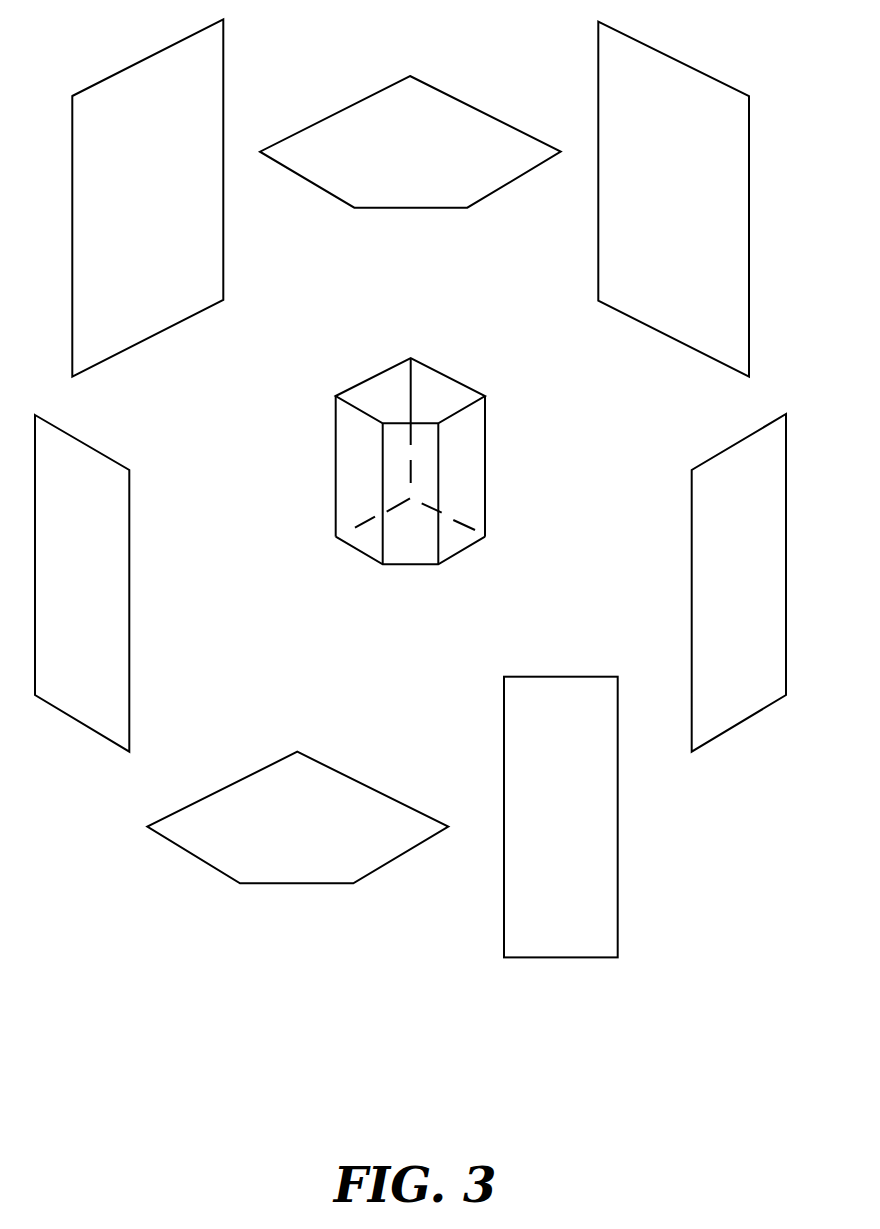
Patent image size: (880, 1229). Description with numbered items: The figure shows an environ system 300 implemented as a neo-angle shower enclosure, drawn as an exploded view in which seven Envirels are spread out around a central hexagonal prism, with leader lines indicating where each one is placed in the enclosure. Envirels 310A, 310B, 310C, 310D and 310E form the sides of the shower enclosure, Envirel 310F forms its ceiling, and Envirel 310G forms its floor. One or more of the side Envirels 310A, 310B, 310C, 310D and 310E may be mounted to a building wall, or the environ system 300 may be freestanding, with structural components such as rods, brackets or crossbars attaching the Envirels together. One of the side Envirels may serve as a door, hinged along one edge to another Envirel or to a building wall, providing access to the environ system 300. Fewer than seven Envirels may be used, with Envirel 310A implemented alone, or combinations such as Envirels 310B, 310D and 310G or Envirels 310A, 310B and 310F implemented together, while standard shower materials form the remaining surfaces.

The environ system 300 is at (477, 388).
The Envirel 310A is at (336, 451).
The Envirel 310B is at (486, 438).
The Envirel 310C is at (359, 499).
The Envirel 310D is at (462, 502).
The Envirel 310E is at (400, 534).
The Envirel 310F is at (398, 403).
The Envirel 310G is at (362, 555).